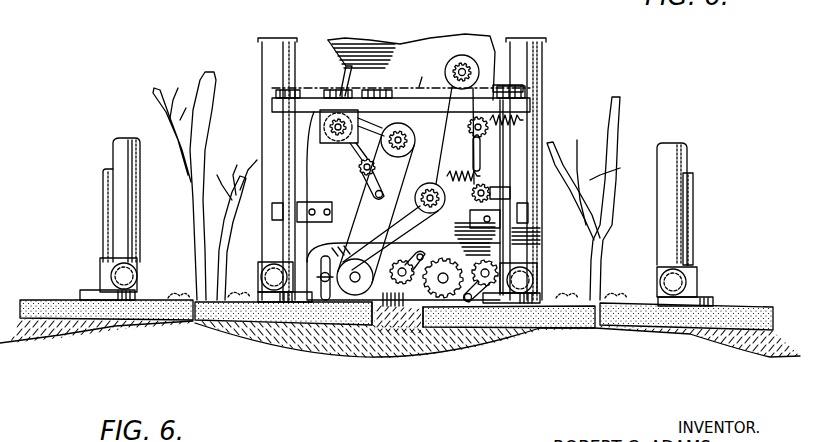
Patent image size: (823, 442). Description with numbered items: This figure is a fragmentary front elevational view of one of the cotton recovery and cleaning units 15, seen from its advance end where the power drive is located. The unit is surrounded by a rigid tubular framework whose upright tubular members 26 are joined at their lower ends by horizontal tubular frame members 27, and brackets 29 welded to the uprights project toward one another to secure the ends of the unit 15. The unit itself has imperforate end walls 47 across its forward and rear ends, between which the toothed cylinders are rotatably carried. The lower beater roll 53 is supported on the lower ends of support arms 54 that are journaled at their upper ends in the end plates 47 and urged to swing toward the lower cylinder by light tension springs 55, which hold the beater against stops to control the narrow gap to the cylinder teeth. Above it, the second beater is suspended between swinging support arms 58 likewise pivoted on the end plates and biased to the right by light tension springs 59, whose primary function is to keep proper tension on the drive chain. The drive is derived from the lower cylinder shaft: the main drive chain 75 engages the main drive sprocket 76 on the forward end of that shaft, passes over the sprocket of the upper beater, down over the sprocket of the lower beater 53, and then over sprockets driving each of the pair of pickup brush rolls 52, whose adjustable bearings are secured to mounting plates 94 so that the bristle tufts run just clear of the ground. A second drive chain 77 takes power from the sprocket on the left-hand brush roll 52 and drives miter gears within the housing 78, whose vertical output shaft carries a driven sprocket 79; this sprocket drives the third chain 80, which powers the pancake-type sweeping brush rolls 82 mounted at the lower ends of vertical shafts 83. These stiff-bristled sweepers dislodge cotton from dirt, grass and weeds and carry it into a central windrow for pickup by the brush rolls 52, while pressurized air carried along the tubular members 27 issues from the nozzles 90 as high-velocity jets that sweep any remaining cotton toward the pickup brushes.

The cotton recovery and cleaning unit 15 is at (450, 27).
The upright tubular member 26 is at (262, 46).
The horizontal tubular frame member 27 is at (268, 263).
The bracket 29 is at (311, 202).
The end wall 47 is at (384, 52).
The brush roll 52 is at (410, 333).
The lower beater roll 53 is at (484, 192).
The support arm 54 is at (483, 163).
The tension spring 55 is at (477, 171).
The swinging support arm 58 is at (449, 119).
The tension spring 59 is at (500, 125).
The main drive chain 75 is at (398, 221).
The main drive sprocket 76 is at (431, 186).
The drive chain 77 is at (366, 200).
The miter gear housing 78 is at (321, 144).
The driven sprocket 79 is at (341, 73).
The third chain 80 is at (431, 72).
The sweeping brush roll 82 is at (52, 310).
The vertical shaft 83 is at (112, 208).
The air nozzle 90 is at (138, 277).
The mounting plate 94 is at (340, 233).